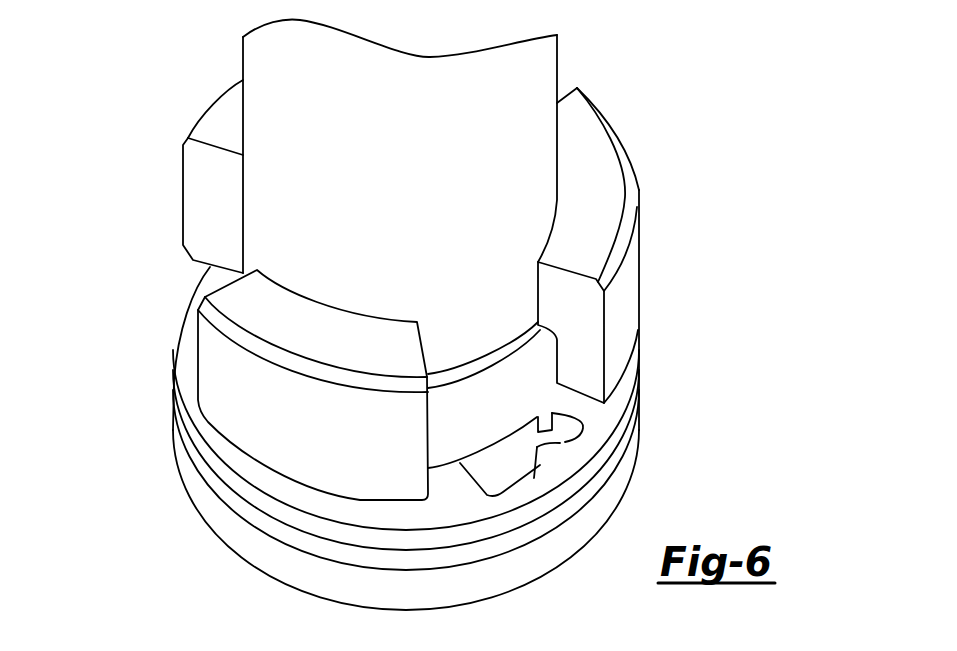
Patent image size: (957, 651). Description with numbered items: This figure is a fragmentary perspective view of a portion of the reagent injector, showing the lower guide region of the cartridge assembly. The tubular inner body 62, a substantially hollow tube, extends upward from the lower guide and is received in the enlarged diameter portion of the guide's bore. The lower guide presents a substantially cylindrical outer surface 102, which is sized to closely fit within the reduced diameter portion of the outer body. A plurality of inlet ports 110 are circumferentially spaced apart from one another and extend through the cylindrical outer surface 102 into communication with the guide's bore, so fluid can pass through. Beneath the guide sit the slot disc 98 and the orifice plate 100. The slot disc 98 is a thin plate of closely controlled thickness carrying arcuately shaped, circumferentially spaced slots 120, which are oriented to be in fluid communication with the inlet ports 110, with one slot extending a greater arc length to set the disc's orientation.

The inner body 62 is at (568, 48).
The slot disc 98 is at (262, 508).
The orifice plate 100 is at (263, 563).
The cylindrical outer surface 102 is at (648, 176).
The inlet ports 110 is at (197, 207).
The slots 120 is at (543, 445).